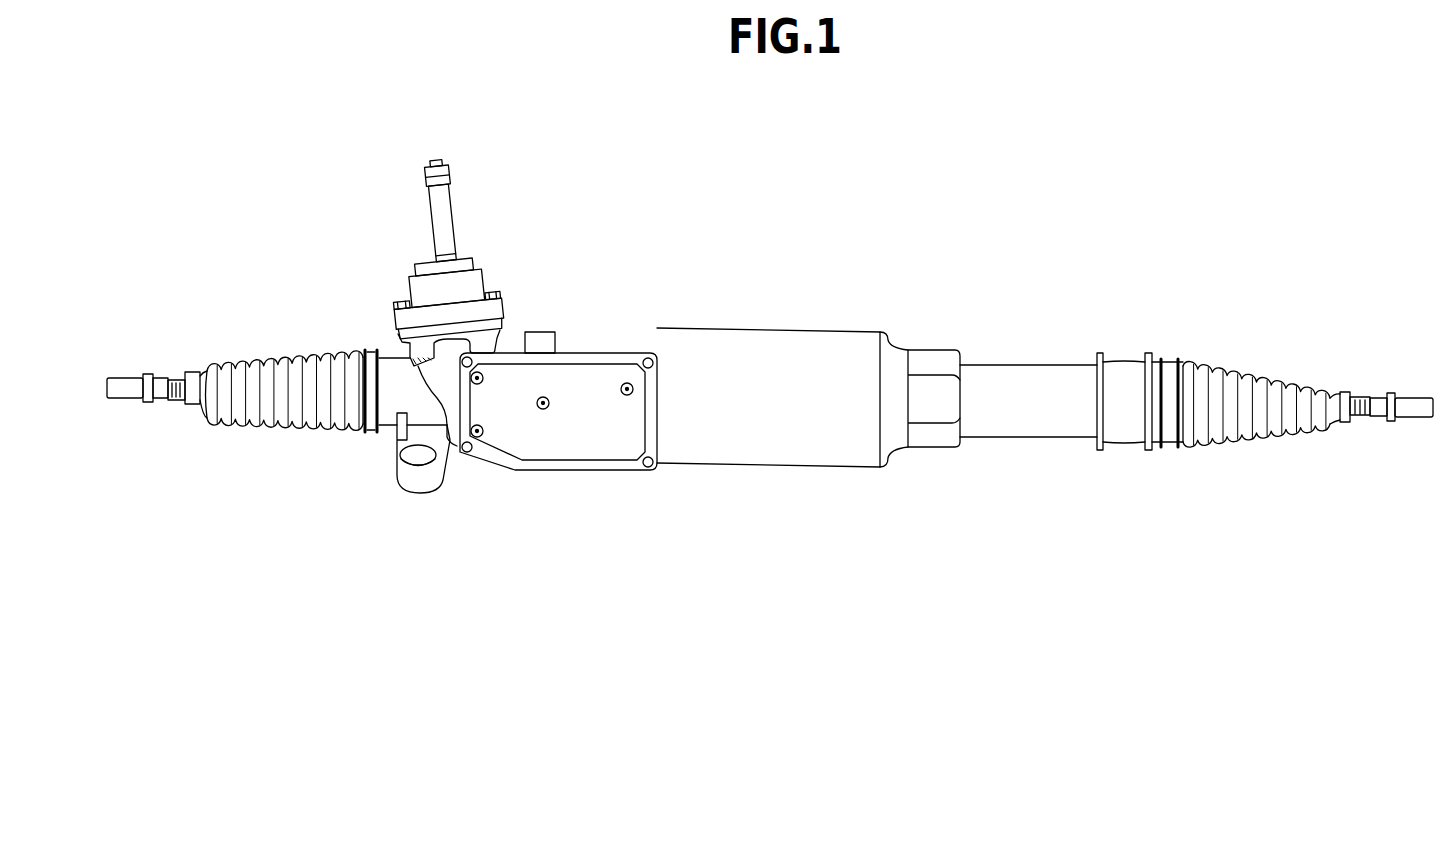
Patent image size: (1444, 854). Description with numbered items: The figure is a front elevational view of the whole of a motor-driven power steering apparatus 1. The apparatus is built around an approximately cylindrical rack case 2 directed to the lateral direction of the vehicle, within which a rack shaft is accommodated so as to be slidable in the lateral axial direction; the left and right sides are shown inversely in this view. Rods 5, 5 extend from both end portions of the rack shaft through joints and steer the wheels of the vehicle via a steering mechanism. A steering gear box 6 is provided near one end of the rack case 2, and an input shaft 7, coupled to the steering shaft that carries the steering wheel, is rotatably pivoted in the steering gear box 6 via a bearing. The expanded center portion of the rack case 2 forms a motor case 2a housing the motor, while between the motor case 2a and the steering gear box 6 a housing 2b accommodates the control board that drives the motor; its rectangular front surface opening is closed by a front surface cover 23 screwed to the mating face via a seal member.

The motor-driven power steering apparatus 1 is at (706, 251).
The rack case 2 is at (893, 486).
The motor case 2a is at (773, 468).
The housing 2b is at (582, 470).
The front surface cover 23 is at (525, 432).
The rod 5 is at (127, 399).
The steering gear box 6 is at (498, 275).
The input shaft 7 is at (428, 221).